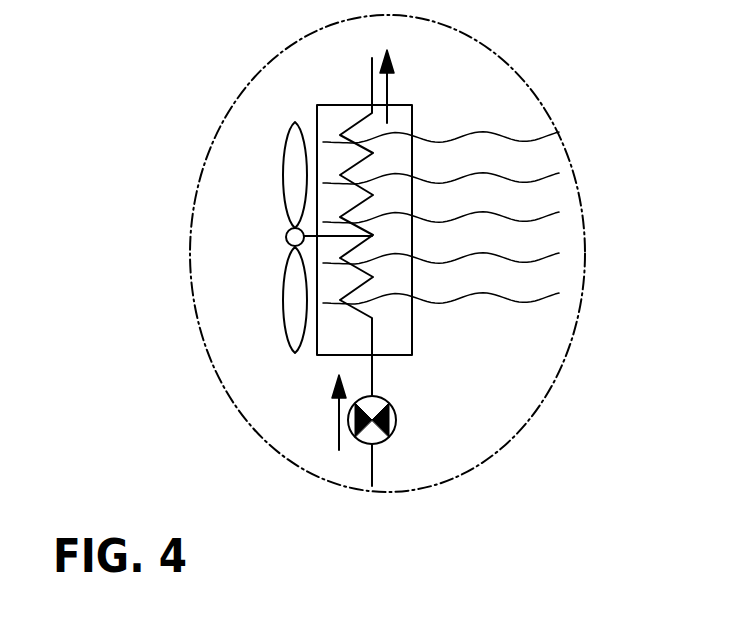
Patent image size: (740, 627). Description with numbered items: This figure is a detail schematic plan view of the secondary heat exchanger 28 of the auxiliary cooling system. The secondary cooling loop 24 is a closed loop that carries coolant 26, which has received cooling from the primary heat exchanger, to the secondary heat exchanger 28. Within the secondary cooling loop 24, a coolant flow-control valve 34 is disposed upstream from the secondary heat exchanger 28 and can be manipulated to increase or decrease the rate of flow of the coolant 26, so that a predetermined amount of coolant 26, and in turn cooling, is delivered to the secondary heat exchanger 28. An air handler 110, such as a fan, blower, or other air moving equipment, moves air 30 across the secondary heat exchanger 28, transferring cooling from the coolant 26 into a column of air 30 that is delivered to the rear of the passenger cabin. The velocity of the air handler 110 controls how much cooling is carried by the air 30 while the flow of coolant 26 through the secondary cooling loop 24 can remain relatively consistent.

The secondary cooling loop 24 is at (373, 467).
The coolant 26 is at (377, 372).
The secondary heat exchanger 28 is at (305, 111).
The air 30 is at (510, 167).
The coolant flow-control valve 34 is at (378, 442).
The air handler 110 is at (275, 188).